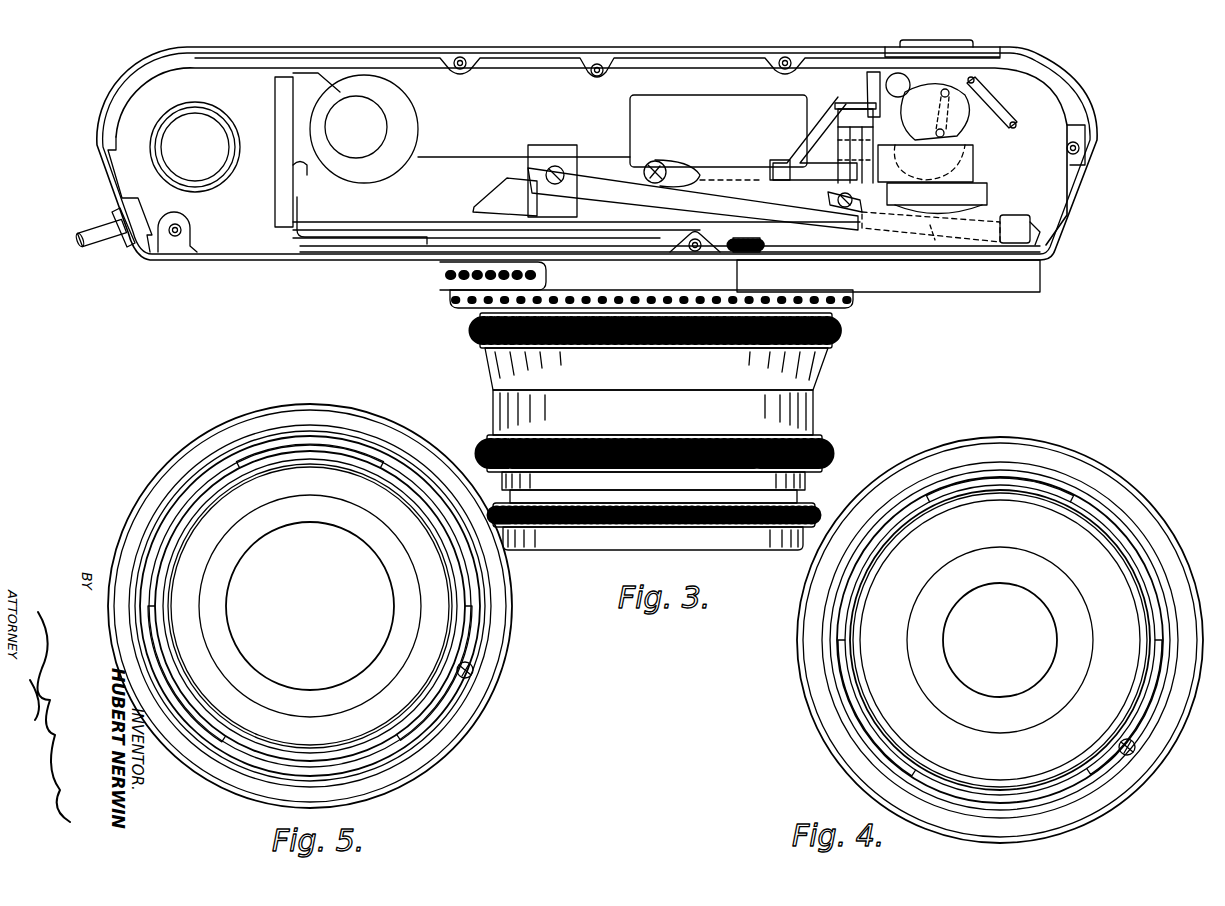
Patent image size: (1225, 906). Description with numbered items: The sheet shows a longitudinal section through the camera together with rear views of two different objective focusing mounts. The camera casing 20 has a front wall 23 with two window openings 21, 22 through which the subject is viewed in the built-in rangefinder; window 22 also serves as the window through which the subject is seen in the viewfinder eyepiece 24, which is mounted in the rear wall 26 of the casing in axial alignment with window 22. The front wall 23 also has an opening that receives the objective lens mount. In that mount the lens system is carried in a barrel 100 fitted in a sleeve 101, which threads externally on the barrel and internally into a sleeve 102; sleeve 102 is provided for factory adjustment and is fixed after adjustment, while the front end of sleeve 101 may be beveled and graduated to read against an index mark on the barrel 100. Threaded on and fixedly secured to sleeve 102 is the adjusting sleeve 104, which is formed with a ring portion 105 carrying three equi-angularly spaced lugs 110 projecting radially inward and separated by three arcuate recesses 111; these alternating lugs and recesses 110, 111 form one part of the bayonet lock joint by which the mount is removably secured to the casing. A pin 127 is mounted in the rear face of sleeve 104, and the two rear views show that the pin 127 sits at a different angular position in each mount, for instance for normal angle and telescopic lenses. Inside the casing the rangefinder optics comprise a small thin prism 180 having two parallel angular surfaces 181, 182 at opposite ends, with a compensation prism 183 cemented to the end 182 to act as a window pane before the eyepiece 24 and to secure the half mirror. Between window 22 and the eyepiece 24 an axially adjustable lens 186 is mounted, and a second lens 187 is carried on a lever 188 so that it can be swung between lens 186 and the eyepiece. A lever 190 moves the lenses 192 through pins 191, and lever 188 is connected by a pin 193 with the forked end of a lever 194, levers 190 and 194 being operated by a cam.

In FIG. 3, the casing 20 is at (99, 153).
In FIG. 3, the window opening 21 is at (442, 278).
In FIG. 3, the window opening 22 is at (978, 292).
In FIG. 3, the front wall 23 is at (327, 258).
In FIG. 3, the eyepiece 24 is at (990, 44).
In FIG. 3, the rear wall 26 is at (856, 48).
In FIG. 3, the barrel 100 is at (800, 496).
In FIG. 3, the sleeve 101 is at (806, 481).
In FIG. 3, the sleeve 102 is at (812, 410).
In FIG. 3, the adjusting sleeve 104 is at (815, 368).
In FIG. 3, the ring portion 105 is at (850, 302).
In FIG. 5, the ring portion 105 is at (470, 726).
In FIG. 4, the ring portion 105 is at (812, 712).
In FIG. 5, the lugs 110 is at (293, 445).
In FIG. 4, the lugs 110 is at (964, 484).
In FIG. 5, the arcuate recesses 111 is at (180, 508).
In FIG. 4, the arcuate recesses 111 is at (848, 593).
In FIG. 5, the pin 127 is at (470, 678).
In FIG. 4, the pin 127 is at (1127, 755).
In FIG. 3, the prism 180 is at (603, 198).
In FIG. 3, the angular surface 181 is at (505, 200).
In FIG. 3, the angular surface 182 is at (938, 255).
In FIG. 3, the compensation prism 183 is at (980, 255).
In FIG. 3, the lens 186 is at (975, 203).
In FIG. 3, the second lens 187 is at (1013, 105).
In FIG. 3, the lever 188 is at (980, 128).
In FIG. 3, the lever 190 is at (775, 180).
In FIG. 3, the pins 191 is at (825, 208).
In FIG. 3, the lenses 192 is at (974, 170).
In FIG. 3, the pin 193 is at (838, 114).
In FIG. 3, the lever 194 is at (808, 158).